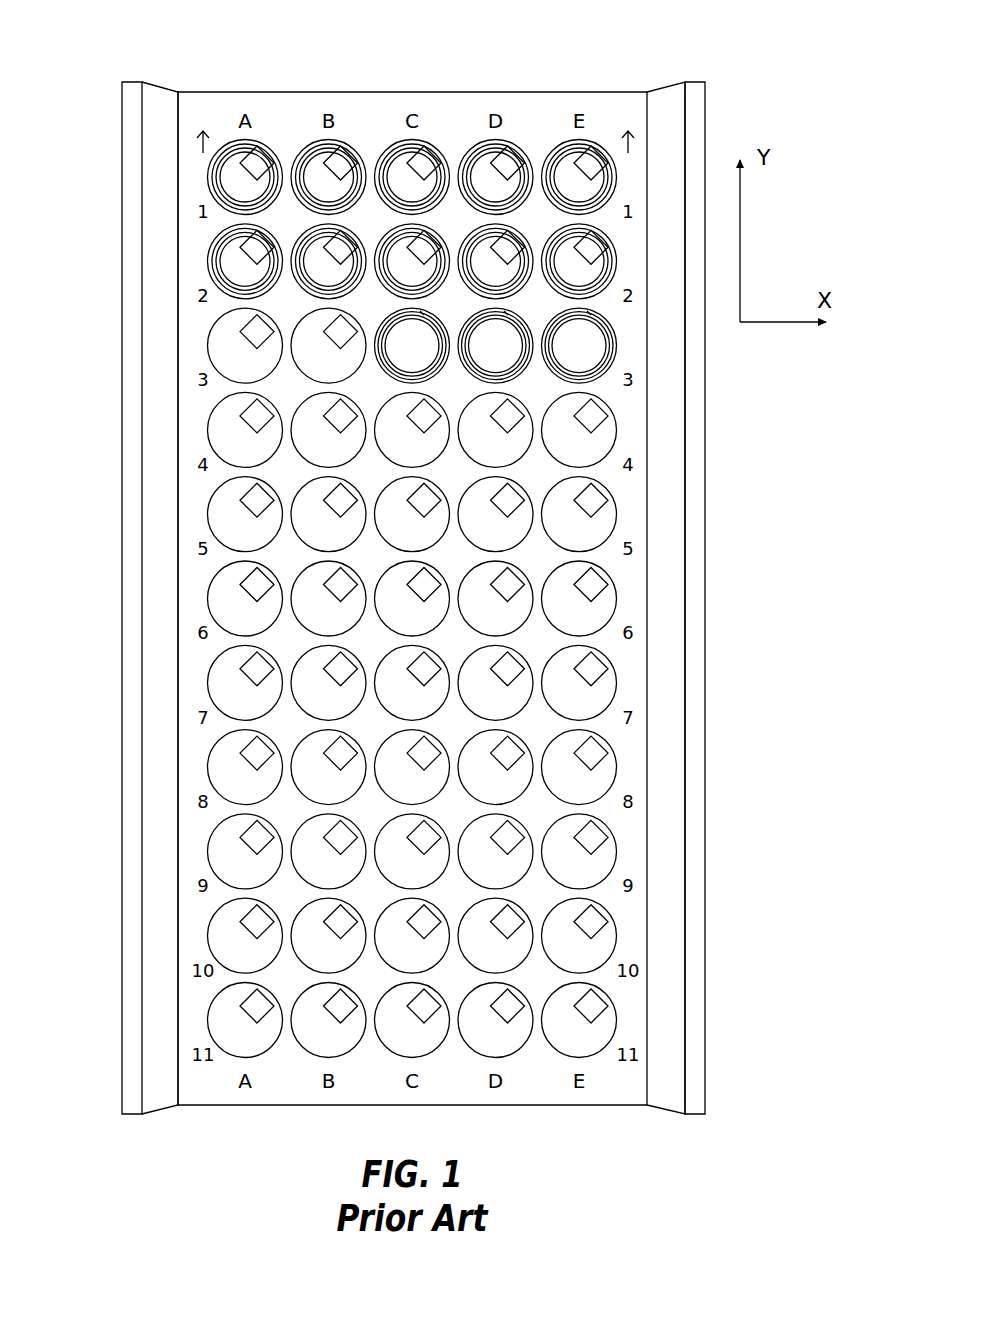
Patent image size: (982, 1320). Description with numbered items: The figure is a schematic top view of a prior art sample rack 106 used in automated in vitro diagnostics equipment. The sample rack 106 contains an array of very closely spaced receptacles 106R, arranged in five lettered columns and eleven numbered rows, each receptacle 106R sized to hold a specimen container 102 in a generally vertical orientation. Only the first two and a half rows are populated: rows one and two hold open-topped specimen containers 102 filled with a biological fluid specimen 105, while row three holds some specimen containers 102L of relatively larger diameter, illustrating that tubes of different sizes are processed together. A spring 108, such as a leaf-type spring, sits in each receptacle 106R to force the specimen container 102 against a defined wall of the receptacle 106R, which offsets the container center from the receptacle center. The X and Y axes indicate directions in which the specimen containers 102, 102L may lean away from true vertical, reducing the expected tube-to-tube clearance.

The sample rack 106 is at (542, 88).
The receptacle 106R is at (207, 350).
The spring 108 is at (241, 500).
The specimen container 102 is at (210, 167).
The biological fluid specimen 105 is at (241, 177).
The larger-diameter specimen container 102L is at (619, 350).